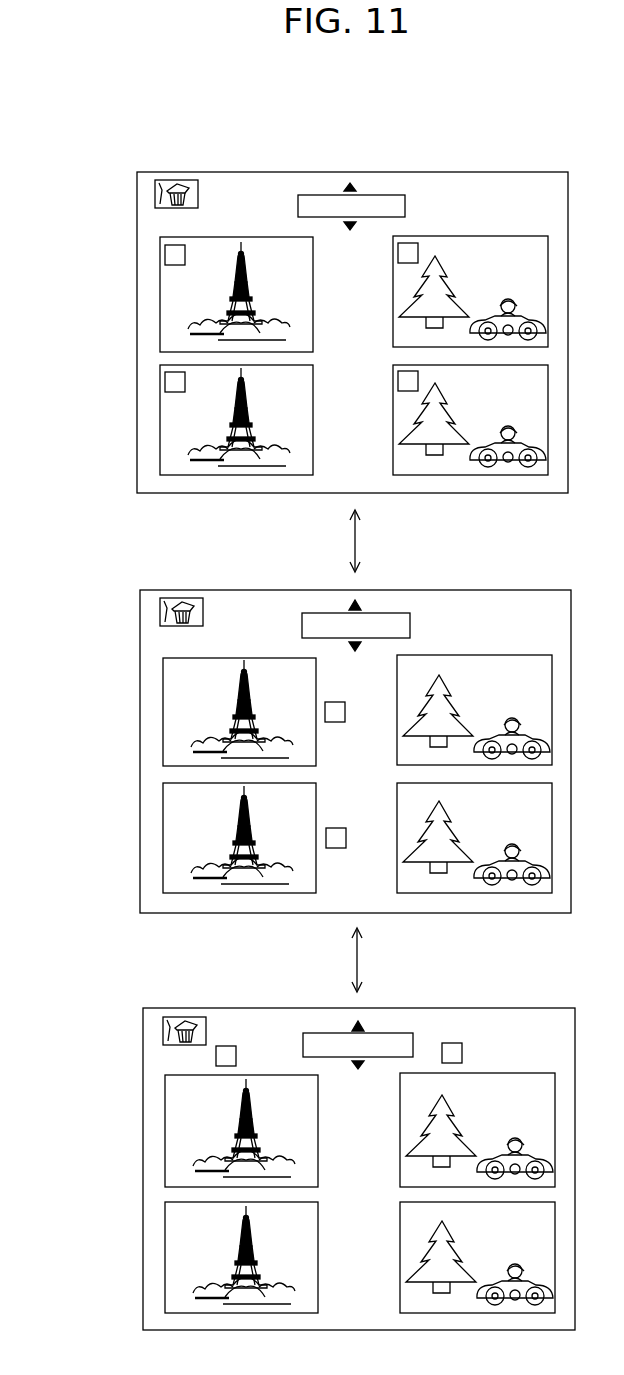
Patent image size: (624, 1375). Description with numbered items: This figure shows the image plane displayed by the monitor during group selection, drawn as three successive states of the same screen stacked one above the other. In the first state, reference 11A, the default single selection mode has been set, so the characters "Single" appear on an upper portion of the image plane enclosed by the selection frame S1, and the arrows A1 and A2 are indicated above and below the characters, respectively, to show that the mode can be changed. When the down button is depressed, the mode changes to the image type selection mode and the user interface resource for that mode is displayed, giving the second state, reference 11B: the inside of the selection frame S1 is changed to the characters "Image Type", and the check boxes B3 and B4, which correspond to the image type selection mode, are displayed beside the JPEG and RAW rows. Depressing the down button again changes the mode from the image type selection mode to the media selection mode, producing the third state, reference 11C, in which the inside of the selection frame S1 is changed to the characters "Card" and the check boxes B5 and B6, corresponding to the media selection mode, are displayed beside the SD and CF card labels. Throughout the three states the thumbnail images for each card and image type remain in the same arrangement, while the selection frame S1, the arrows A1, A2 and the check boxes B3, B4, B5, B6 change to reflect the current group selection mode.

The image plane state in single selection mode 11A is at (299, 315).
The image plane state in image type selection mode 11B is at (302, 760).
The image plane state in media selection mode 11C is at (304, 1152).
The arrow A1 is at (348, 186).
The arrow A2 is at (357, 228).
The selection frame S1 is at (382, 193).
The check box B3 is at (338, 700).
The check box B4 is at (338, 848).
The check box B5 is at (228, 1045).
The check box B6 is at (456, 1043).